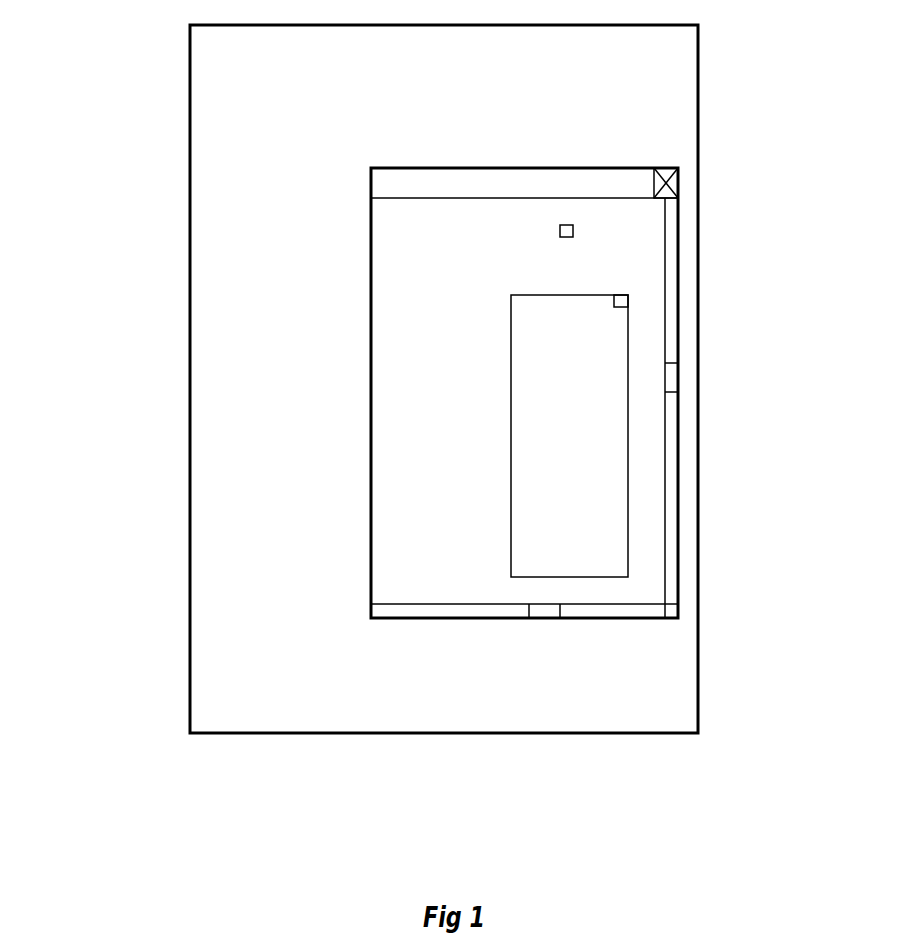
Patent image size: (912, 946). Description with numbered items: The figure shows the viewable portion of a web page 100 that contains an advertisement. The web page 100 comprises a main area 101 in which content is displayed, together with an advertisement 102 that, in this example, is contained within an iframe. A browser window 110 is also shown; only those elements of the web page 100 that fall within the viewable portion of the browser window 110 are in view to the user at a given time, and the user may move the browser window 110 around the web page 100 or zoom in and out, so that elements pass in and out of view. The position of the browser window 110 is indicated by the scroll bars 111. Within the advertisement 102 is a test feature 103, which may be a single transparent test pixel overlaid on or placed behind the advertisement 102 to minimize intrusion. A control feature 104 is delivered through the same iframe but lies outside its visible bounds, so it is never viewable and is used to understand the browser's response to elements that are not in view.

The web page 100 is at (189, 296).
The main area 101 is at (253, 144).
The advertisement 102 is at (613, 498).
The test feature 103 is at (623, 304).
The control feature 104 is at (577, 222).
The browser window 110 is at (680, 293).
The scroll bars 111 is at (665, 571).